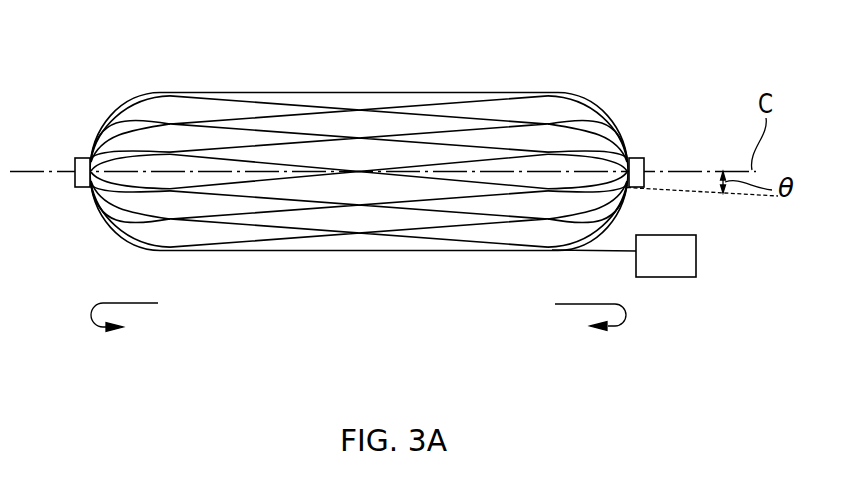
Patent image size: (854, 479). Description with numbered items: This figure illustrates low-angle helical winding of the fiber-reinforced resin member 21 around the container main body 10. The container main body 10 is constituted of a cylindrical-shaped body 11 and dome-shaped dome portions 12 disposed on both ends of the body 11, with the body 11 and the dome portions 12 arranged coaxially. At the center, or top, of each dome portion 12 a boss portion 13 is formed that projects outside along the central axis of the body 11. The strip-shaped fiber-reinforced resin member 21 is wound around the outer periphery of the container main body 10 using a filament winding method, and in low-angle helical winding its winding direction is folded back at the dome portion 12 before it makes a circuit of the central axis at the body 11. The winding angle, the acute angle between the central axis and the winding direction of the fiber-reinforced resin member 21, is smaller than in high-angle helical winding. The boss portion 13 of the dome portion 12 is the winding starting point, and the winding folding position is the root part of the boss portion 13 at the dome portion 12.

The container main body 10 is at (624, 107).
The body 11 is at (360, 92).
The dome portion 12 is at (132, 100).
The boss portion 13 is at (82, 187).
The fiber-reinforced resin member 21 is at (602, 251).